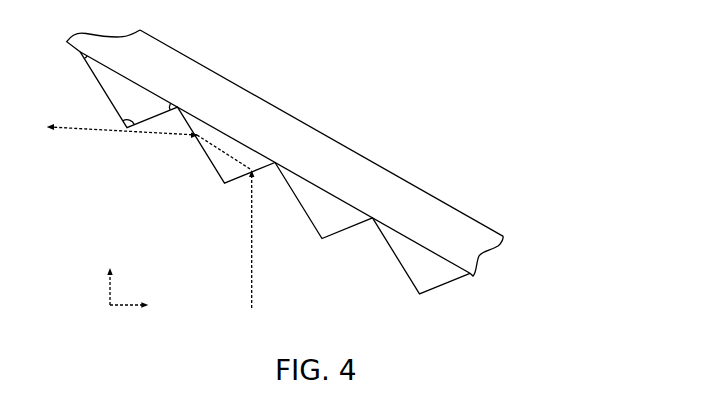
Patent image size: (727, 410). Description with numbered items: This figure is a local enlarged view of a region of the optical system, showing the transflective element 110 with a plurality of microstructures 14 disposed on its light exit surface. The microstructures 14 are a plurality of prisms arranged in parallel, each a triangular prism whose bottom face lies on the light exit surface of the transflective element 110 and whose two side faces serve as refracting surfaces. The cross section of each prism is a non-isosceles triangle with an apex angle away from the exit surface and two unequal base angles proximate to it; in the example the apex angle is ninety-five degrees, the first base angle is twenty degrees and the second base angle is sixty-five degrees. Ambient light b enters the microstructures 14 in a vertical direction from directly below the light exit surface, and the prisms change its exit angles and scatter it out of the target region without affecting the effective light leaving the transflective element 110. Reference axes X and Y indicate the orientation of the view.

The transflective element 110 is at (247, 115).
The microstructures 14 is at (410, 248).
The ambient light b is at (151, 216).
The X axis X is at (106, 285).
The Y axis Y is at (129, 313).